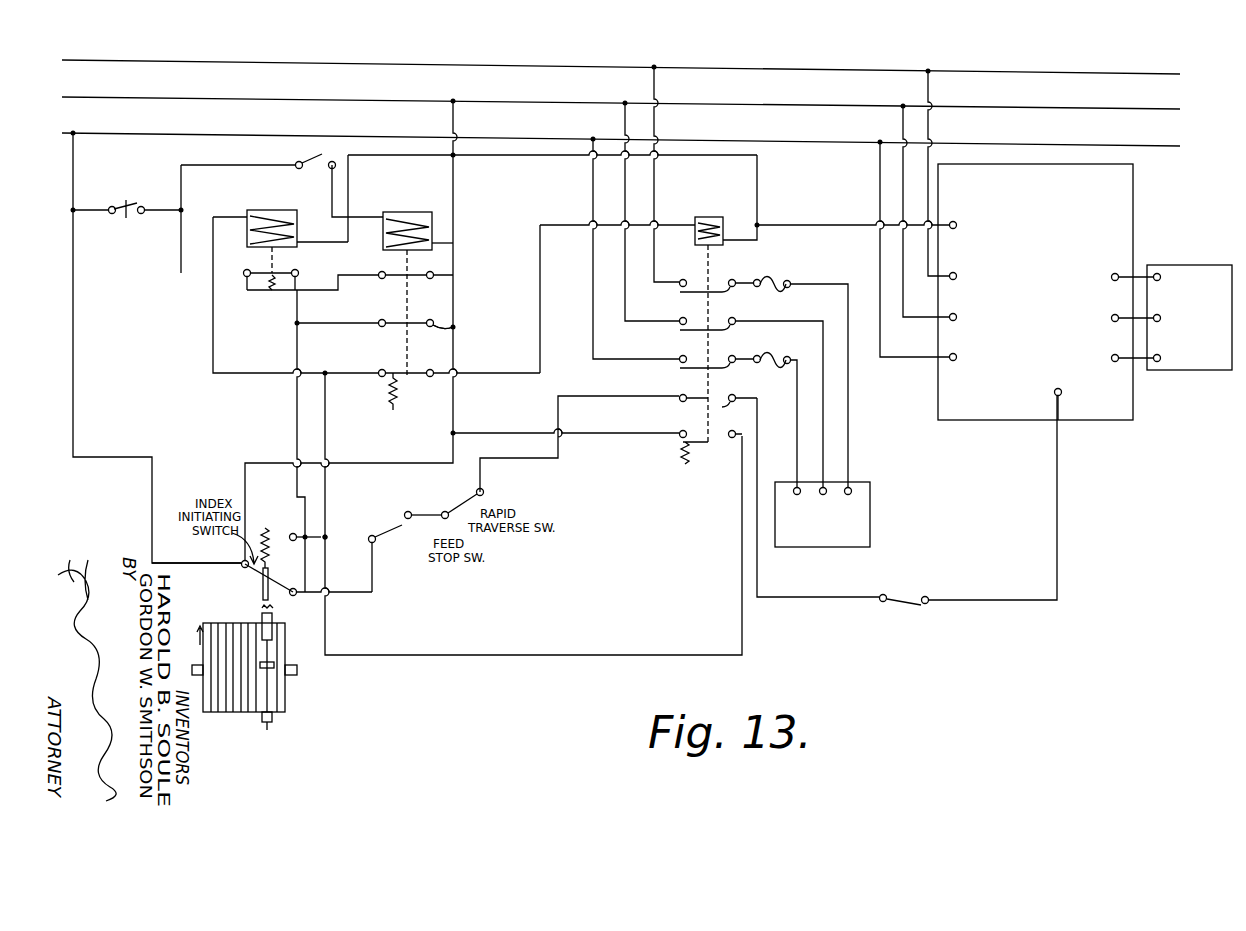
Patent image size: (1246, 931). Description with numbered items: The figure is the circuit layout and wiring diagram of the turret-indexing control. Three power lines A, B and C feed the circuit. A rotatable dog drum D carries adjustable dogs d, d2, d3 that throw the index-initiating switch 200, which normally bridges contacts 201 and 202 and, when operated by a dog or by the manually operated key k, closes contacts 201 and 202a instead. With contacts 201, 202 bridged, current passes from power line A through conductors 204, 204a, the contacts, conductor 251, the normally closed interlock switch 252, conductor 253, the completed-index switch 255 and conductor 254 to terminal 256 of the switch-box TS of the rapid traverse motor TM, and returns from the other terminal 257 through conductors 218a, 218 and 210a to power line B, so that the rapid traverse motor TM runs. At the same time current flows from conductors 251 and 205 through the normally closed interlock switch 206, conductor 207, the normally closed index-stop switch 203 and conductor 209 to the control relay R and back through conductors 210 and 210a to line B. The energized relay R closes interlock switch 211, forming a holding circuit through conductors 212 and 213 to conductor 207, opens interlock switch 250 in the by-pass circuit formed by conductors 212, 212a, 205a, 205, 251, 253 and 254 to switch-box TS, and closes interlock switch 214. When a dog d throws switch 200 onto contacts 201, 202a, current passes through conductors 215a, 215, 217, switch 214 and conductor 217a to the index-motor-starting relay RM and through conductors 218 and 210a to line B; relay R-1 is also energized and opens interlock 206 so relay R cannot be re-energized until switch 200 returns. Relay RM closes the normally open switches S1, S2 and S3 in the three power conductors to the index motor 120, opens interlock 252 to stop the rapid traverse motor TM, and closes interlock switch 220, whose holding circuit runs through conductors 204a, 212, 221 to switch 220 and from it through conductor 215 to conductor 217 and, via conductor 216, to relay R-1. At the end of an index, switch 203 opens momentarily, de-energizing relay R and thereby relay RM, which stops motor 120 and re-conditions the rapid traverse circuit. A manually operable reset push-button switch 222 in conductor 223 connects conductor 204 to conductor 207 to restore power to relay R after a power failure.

The index motor 120 is at (872, 520).
The index-initiating switch 200 is at (266, 582).
The switch contact 201 is at (243, 567).
The switch contact 202 is at (290, 597).
The switch contact 202a is at (290, 533).
The index-stop switch 203 is at (268, 150).
The conductor 204 is at (77, 336).
The conductor 204a is at (215, 558).
The conductor 205 is at (287, 400).
The conductor 205a is at (322, 325).
The interlock switch 206 is at (275, 274).
The conductor 207 is at (182, 184).
The conductor 209 is at (360, 218).
The conductor 210 is at (454, 179).
The conductor 210a is at (462, 122).
The interlock switch 211 is at (413, 275).
The conductor 212 is at (236, 466).
The conductor 212a is at (472, 334).
The conductor 213 is at (315, 290).
The interlock switch 214 is at (397, 401).
The conductor 215 is at (330, 476).
The conductor 215a is at (338, 537).
The conductor 216 is at (213, 316).
The conductor 217 is at (350, 373).
The conductor 217a is at (512, 363).
The conductor 218 is at (760, 193).
The conductor 218a is at (800, 226).
The interlock switch 220 is at (711, 448).
The conductor 221 is at (488, 435).
The reset push-button switch 222 is at (150, 195).
The conductor 223 is at (110, 213).
The interlock switch 250 is at (420, 320).
The conductor 251 is at (642, 396).
The interlock switch 252 is at (728, 402).
The conductor 253 is at (800, 597).
The conductor 254 is at (1004, 605).
The completed-index switch 255 is at (904, 607).
The terminal 256 is at (1063, 394).
The terminal 257 is at (958, 232).
The power line A is at (392, 134).
The power line B is at (382, 98).
The power line C is at (376, 62).
The control relay R is at (418, 231).
The relay R-1 is at (284, 228).
The index-motor-starting relay RM is at (641, 331).
The switch S1 is at (764, 382).
The switch S2 is at (752, 403).
The switch S3 is at (739, 420).
The switch-box TS is at (1049, 292).
The rapid traverse motor TM is at (1189, 317).
The dog drum D is at (286, 691).
The adjustable dog d is at (273, 618).
The dog d2 is at (274, 665).
The dog d3 is at (274, 731).
The manually operated key k is at (260, 609).